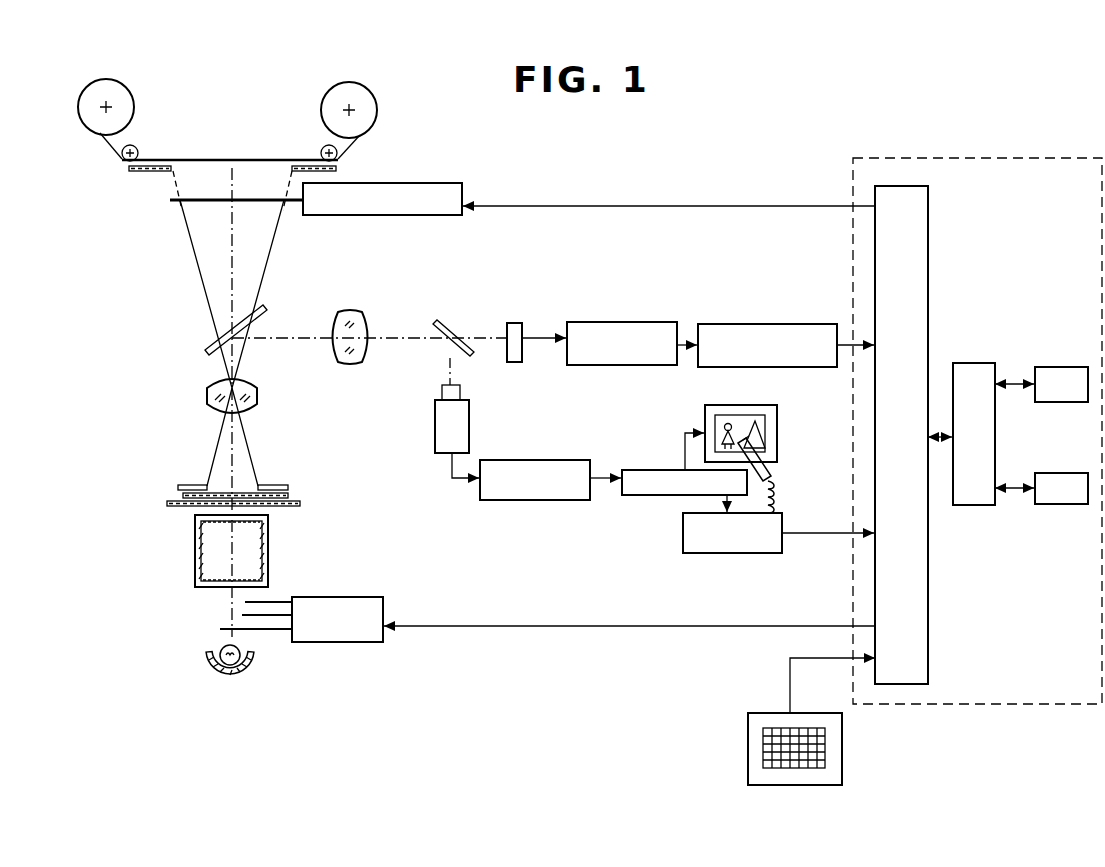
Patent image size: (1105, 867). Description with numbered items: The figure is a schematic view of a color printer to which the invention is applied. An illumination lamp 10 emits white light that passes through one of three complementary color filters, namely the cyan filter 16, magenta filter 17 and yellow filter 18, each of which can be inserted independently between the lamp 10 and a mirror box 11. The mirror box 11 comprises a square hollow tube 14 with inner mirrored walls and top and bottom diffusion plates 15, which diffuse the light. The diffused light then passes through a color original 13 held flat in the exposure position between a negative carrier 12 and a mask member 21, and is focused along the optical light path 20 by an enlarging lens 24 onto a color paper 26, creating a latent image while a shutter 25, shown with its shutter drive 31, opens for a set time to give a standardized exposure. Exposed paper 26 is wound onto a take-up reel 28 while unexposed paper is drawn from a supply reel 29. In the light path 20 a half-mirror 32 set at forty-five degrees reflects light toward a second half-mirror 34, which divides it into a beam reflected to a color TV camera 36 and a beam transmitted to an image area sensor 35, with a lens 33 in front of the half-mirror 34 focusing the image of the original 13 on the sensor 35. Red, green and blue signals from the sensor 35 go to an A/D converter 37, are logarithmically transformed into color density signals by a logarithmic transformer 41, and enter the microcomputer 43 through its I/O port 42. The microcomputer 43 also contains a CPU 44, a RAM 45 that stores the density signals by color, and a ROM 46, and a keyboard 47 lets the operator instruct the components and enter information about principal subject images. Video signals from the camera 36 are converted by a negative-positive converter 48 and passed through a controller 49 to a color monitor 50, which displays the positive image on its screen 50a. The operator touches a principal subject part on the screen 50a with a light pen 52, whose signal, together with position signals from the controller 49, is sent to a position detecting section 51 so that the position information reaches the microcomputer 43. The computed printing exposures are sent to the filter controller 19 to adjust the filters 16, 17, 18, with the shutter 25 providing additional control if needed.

The illumination lamp 10 is at (208, 655).
The mirror box 11 is at (229, 577).
The negative carrier 12 is at (172, 506).
The color original 13 is at (183, 495).
The square hollow tube 14 is at (208, 565).
The diffusion plates 15 is at (254, 523).
The cyan color filter 16 is at (284, 631).
The magenta color filter 17 is at (270, 617).
The yellow color filter 18 is at (282, 600).
The filter controller 19 is at (338, 642).
The optical light path 20 is at (233, 462).
The mask member 21 is at (190, 485).
The enlarging lens 24 is at (207, 397).
The shutter 25 is at (176, 203).
The color paper 26 is at (210, 160).
The take-up reel 28 is at (322, 105).
The supply reel 29 is at (134, 106).
The shutter drive 31 is at (394, 183).
The half-mirror 32 is at (210, 345).
The lens 33 is at (350, 311).
The half-mirror 34 is at (450, 324).
The image area sensor 35 is at (513, 323).
The color TV camera 36 is at (435, 420).
The A/D converter 37 is at (621, 322).
The logarithmic transformer 41 is at (761, 324).
The I/O port 42 is at (930, 596).
The microcomputer 43 is at (980, 158).
The CPU 44 is at (972, 363).
The RAM 45 is at (1058, 367).
The ROM 46 is at (1062, 504).
The keyboard 47 is at (748, 750).
The negative-positive converter 48 is at (528, 460).
The controller 49 is at (661, 470).
The color monitor 50 is at (756, 416).
The screen 50a is at (722, 418).
The position detecting section 51 is at (683, 535).
The light pen 52 is at (775, 462).